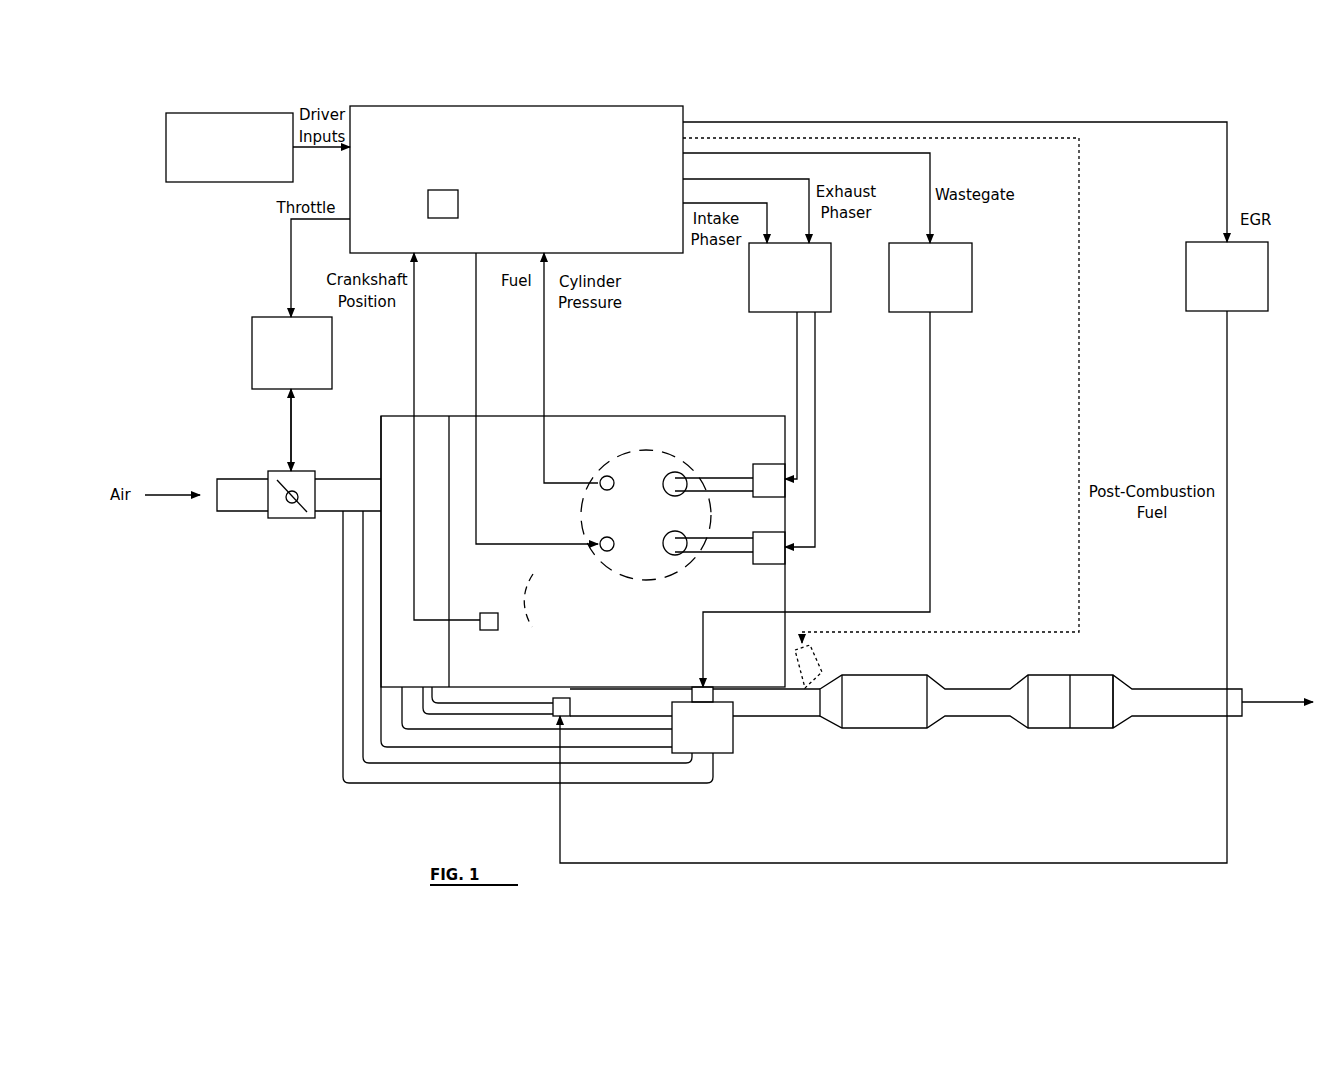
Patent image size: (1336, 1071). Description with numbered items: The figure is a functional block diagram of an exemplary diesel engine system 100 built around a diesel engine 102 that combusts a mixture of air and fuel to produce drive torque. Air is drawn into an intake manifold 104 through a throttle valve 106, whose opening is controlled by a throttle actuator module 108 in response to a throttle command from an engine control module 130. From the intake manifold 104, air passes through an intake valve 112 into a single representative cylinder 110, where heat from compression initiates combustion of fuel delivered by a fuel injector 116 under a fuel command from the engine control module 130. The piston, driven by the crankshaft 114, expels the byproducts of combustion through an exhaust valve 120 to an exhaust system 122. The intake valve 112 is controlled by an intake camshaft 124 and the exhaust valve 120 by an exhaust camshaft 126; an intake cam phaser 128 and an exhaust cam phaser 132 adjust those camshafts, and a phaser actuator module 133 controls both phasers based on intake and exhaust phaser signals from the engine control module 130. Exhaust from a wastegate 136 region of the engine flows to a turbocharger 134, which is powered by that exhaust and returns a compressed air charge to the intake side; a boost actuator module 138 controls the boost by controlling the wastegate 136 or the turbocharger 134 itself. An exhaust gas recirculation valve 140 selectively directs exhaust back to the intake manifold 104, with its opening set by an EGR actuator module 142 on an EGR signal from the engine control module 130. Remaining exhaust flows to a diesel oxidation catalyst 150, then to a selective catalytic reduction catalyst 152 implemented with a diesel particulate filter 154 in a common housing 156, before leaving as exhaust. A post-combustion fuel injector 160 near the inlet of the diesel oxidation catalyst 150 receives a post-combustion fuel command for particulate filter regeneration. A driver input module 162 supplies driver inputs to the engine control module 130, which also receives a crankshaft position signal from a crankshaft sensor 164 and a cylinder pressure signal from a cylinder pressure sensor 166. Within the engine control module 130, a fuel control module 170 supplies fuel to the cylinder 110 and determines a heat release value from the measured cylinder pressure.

The diesel engine system 100 is at (175, 57).
The diesel engine 102 is at (724, 416).
The intake manifold 104 is at (381, 422).
The throttle valve 106 is at (289, 518).
The throttle actuator module 108 is at (268, 317).
The cylinder 110 is at (618, 594).
The intake valve 112 is at (678, 471).
The crankshaft 114 is at (530, 575).
The fuel injector 116 is at (602, 551).
The exhaust valve 120 is at (678, 556).
The exhaust system 122 is at (1120, 632).
The intake camshaft 124 is at (729, 478).
The exhaust camshaft 126 is at (729, 552).
The intake cam phaser 128 is at (768, 464).
The engine control module 130 is at (519, 106).
The exhaust cam phaser 132 is at (773, 564).
The phaser actuator module 133 is at (831, 253).
The turbocharger 134 is at (733, 740).
The wastegate 136 is at (692, 688).
The boost actuator module 138 is at (948, 312).
The exhaust gas recirculation valve 140 is at (562, 698).
The EGR actuator module 142 is at (1246, 311).
The diesel oxidation catalyst 150 is at (878, 728).
The selective catalytic reduction catalyst 152 is at (1043, 728).
The diesel particulate filter 154 is at (1105, 728).
The common housing 156 is at (1072, 675).
The post-combustion fuel injector 160 is at (820, 650).
The driver input module 162 is at (166, 145).
The crankshaft sensor 164 is at (490, 613).
The cylinder pressure sensor 166 is at (603, 476).
The fuel control module 170 is at (443, 190).